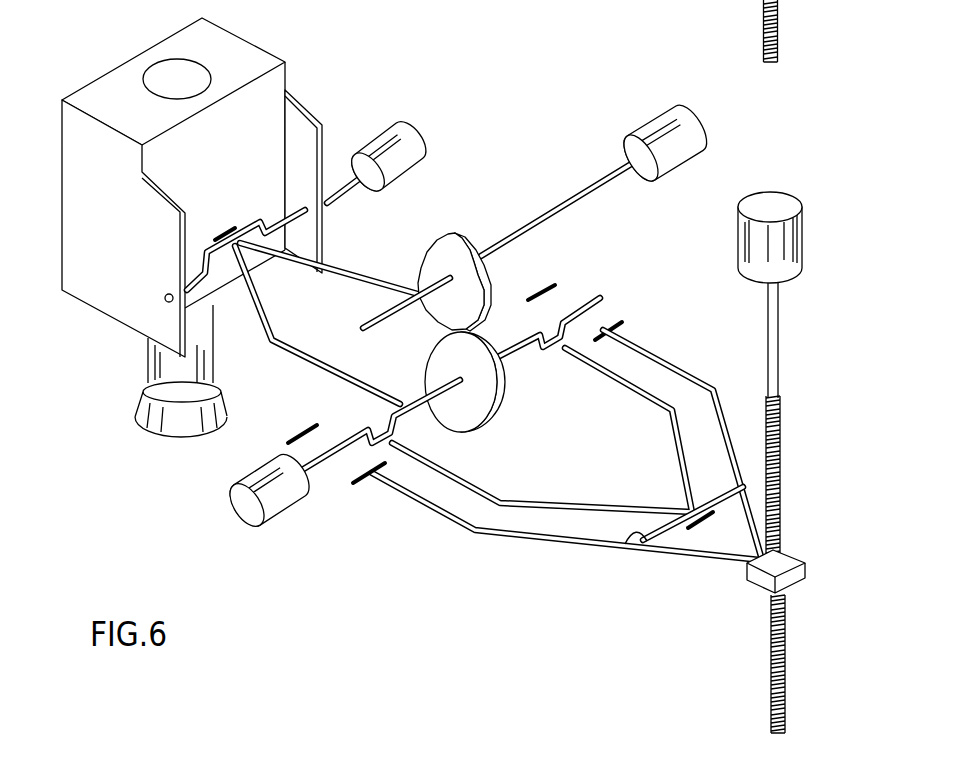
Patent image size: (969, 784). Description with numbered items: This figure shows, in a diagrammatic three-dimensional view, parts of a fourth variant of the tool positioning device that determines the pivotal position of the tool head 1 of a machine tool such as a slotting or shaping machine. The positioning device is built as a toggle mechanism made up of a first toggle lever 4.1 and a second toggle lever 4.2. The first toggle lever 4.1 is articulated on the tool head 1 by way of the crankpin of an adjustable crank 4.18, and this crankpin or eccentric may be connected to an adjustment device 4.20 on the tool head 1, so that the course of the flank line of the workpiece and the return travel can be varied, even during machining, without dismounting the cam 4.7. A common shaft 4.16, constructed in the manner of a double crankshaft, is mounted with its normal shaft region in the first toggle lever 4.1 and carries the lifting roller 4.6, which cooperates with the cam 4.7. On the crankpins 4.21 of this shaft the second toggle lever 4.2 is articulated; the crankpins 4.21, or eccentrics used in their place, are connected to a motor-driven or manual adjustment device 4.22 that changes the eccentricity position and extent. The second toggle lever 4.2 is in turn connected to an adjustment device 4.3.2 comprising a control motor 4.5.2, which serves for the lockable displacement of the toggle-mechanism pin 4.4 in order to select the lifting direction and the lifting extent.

The tool head 1 is at (90, 98).
The first toggle lever 4.1 is at (357, 277).
The adjustable crank 4.18 is at (250, 250).
The adjustment device 4.20 is at (413, 142).
The cam 4.7 is at (453, 240).
The common shaft 4.16 is at (588, 297).
The crankpins 4.21 is at (582, 322).
The lifting roller 4.6 is at (486, 411).
The second toggle lever 4.2 is at (488, 490).
The adjustment device 4.3.2 is at (560, 530).
The toggle-mechanism pin 4.4 is at (625, 538).
The adjustment device 4.22 is at (287, 508).
The control motor 4.5.2 is at (770, 200).